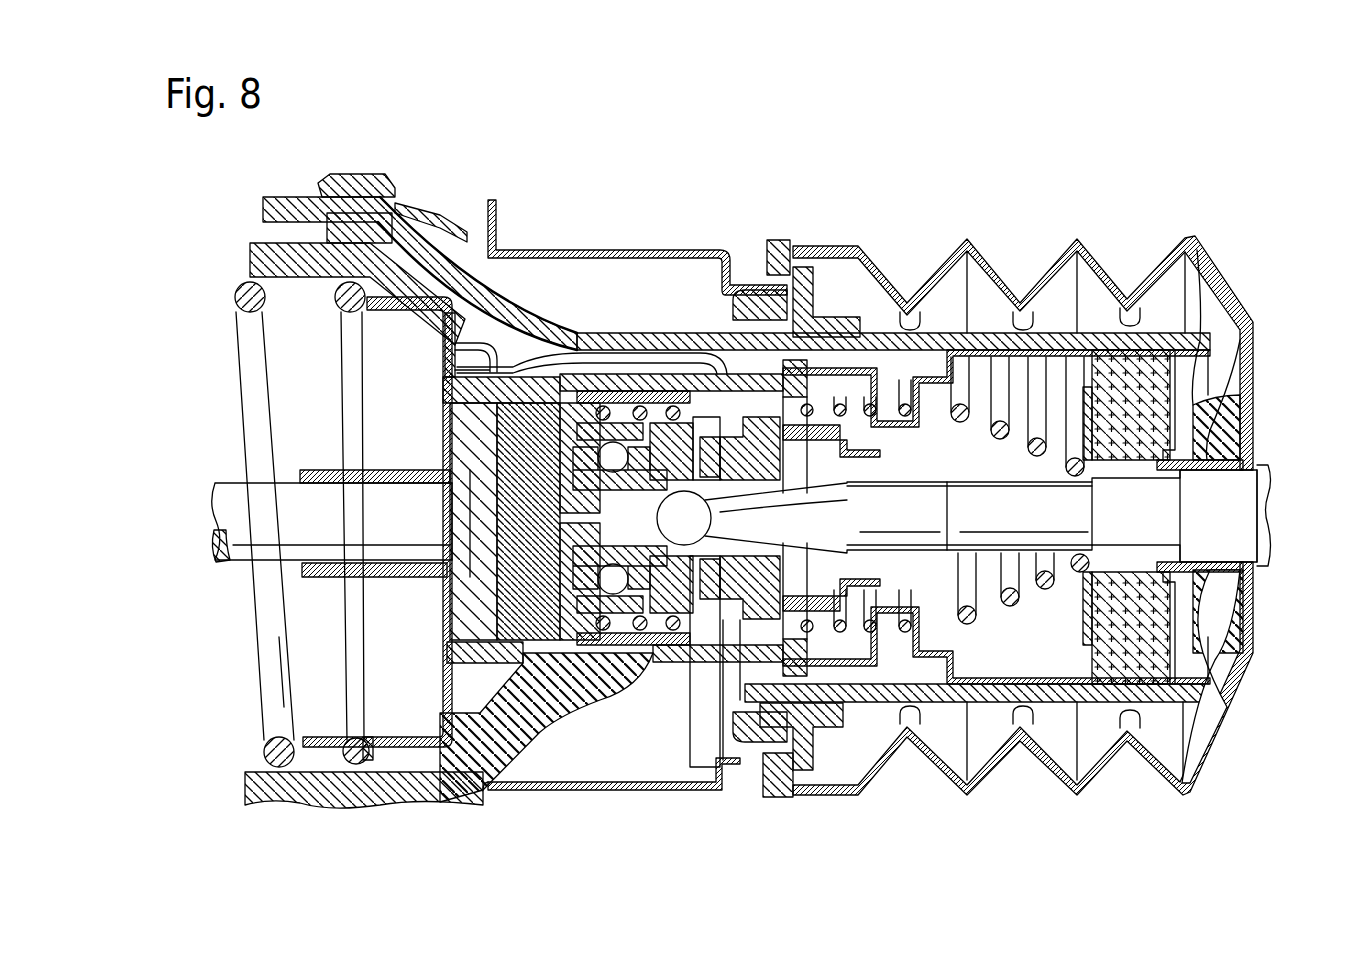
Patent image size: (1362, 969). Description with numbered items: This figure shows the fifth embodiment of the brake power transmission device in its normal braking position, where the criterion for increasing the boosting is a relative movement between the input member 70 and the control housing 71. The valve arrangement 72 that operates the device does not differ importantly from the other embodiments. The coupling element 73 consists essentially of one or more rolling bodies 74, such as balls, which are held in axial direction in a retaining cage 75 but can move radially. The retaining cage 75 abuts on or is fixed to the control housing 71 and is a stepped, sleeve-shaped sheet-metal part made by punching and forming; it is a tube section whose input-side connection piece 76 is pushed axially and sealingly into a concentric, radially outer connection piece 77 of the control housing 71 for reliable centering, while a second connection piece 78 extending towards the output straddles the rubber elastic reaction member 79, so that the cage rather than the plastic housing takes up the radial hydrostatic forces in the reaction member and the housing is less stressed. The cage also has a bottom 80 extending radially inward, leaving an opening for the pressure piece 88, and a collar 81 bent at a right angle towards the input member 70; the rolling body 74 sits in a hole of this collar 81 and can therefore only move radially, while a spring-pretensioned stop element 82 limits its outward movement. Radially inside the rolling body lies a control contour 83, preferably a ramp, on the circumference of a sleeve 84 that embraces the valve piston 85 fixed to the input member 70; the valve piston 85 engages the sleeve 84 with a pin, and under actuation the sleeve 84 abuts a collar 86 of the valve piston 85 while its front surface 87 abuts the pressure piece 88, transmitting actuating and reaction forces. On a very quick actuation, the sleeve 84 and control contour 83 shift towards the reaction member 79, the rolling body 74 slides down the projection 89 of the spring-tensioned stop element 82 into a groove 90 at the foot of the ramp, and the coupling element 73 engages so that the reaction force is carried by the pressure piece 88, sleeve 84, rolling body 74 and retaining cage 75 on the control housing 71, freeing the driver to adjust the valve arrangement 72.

The input member 70 is at (1240, 508).
The control housing 71 is at (990, 340).
The valve arrangement 72 is at (717, 777).
The coupling element 73 is at (690, 700).
The rolling body 74 is at (630, 600).
The retaining cage 75 is at (547, 707).
The connection piece 76 is at (650, 393).
The connection piece 77 is at (597, 383).
The second connection piece 78 is at (513, 387).
The reaction member 79 is at (463, 373).
The bottom 80 is at (482, 745).
The collar 81 is at (723, 517).
The stop element 82 is at (605, 622).
The control contour 83 is at (500, 553).
The sleeve 84 is at (500, 513).
The valve piston 85 is at (630, 420).
The collar 86 is at (690, 463).
The front surface 87 is at (513, 433).
The pressure piece 88 is at (520, 470).
The projection 89 is at (490, 612).
The groove 90 is at (658, 630).